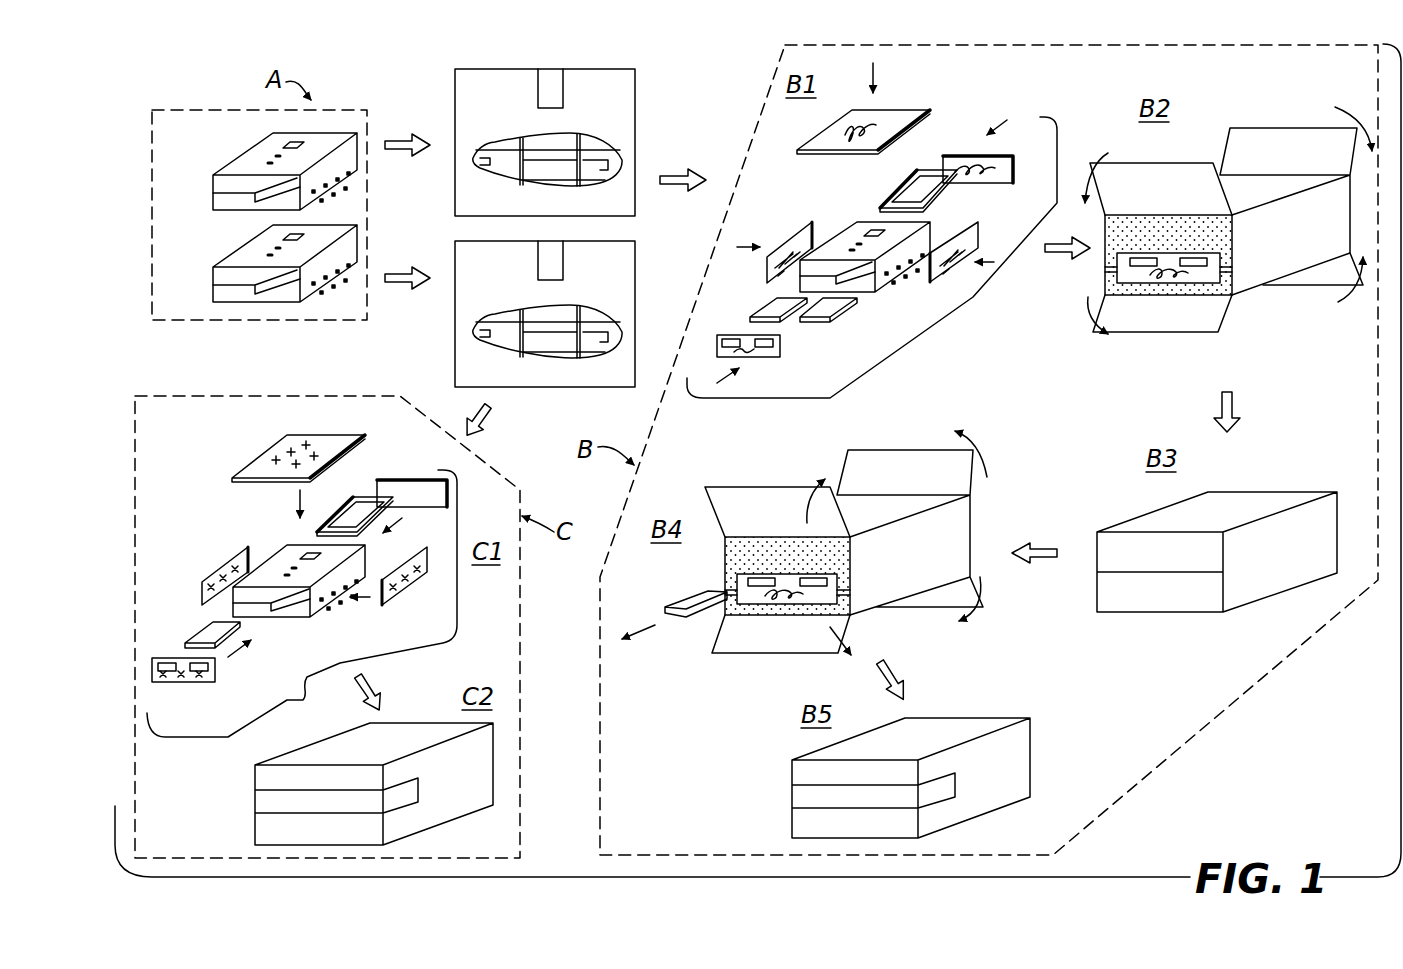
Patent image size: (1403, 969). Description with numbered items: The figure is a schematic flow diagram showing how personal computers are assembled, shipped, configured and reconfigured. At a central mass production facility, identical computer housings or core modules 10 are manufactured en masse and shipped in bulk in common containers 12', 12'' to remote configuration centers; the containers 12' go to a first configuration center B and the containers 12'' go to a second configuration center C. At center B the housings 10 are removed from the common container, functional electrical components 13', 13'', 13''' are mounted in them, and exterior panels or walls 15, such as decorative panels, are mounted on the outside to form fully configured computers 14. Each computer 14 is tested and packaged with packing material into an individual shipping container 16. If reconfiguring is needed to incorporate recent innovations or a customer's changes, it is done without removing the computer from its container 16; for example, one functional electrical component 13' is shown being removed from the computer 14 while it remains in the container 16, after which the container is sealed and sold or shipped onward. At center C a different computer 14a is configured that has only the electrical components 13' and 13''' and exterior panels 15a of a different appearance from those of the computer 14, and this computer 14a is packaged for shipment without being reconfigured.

The computer housing or core module 10 is at (550, 407).
The common container 12' is at (583, 142).
The common container 12'' is at (585, 314).
The functional electrical component 13' is at (687, 457).
The functional electrical component 13'' is at (1032, 403).
The functional electrical component 13''' is at (637, 352).
The fully configured computer 14 is at (997, 472).
The computer 14a is at (320, 657).
The exterior panel or wall 15 is at (885, 223).
The exterior panel 15a is at (298, 576).
The individual shipping container 16 is at (1290, 277).